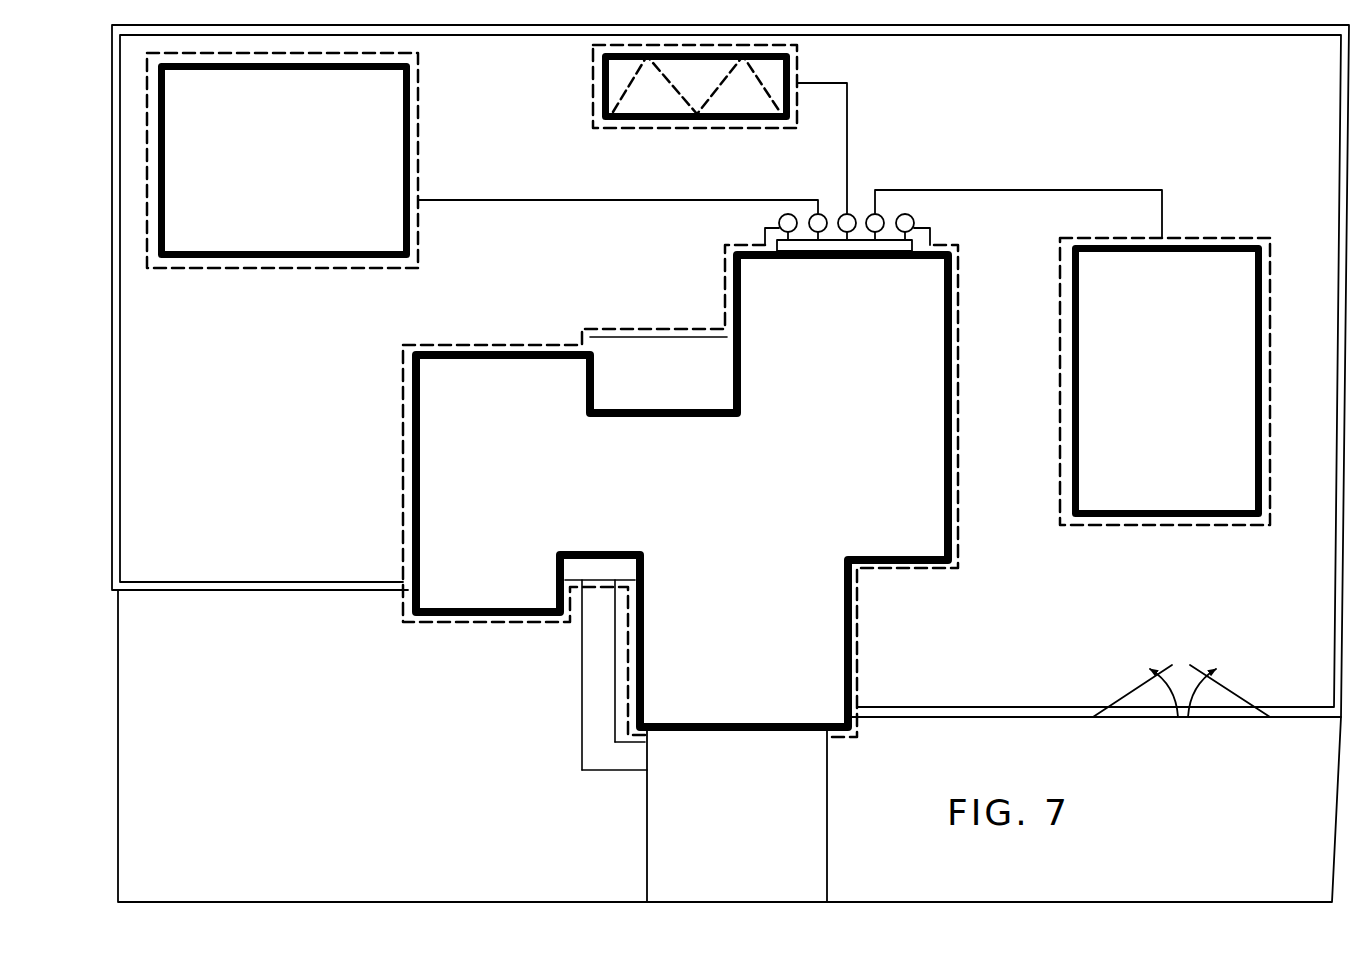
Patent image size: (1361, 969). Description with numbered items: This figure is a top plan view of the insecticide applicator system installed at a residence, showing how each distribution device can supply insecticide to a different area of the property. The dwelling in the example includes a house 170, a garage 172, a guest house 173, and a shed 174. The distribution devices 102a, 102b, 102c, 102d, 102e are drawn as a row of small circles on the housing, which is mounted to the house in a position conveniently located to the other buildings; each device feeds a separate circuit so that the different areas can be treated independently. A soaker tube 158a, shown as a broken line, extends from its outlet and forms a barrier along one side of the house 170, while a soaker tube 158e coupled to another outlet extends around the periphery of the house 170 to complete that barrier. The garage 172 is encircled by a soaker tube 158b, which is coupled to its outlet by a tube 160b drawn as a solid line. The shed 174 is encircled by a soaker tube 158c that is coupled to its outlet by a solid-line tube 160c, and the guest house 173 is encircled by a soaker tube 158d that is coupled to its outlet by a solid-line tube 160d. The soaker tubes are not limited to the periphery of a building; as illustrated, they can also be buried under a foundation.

The house 170 is at (892, 485).
The garage 172 is at (1142, 442).
The guest house 173 is at (327, 187).
The shed 174 is at (672, 111).
The soaker tube 158a is at (954, 241).
The soaker tube 158b is at (1225, 238).
The soaker tube 158c is at (797, 62).
The soaker tube 158d is at (418, 117).
The soaker tube 158e is at (608, 329).
The tube 160b is at (1058, 190).
The tube 160c is at (847, 128).
The tube 160d is at (493, 200).
The distribution device 102a is at (917, 215).
The distribution device 102b is at (881, 212).
The distribution device 102c is at (852, 212).
The distribution device 102d is at (821, 212).
The distribution device 102e is at (781, 211).